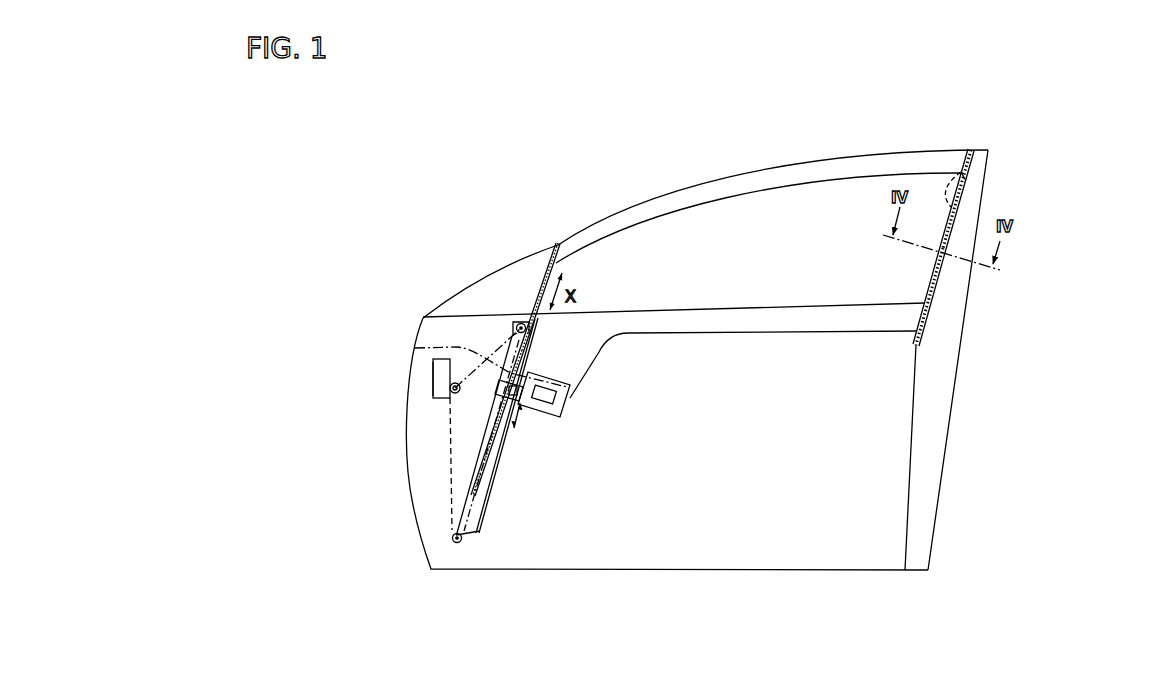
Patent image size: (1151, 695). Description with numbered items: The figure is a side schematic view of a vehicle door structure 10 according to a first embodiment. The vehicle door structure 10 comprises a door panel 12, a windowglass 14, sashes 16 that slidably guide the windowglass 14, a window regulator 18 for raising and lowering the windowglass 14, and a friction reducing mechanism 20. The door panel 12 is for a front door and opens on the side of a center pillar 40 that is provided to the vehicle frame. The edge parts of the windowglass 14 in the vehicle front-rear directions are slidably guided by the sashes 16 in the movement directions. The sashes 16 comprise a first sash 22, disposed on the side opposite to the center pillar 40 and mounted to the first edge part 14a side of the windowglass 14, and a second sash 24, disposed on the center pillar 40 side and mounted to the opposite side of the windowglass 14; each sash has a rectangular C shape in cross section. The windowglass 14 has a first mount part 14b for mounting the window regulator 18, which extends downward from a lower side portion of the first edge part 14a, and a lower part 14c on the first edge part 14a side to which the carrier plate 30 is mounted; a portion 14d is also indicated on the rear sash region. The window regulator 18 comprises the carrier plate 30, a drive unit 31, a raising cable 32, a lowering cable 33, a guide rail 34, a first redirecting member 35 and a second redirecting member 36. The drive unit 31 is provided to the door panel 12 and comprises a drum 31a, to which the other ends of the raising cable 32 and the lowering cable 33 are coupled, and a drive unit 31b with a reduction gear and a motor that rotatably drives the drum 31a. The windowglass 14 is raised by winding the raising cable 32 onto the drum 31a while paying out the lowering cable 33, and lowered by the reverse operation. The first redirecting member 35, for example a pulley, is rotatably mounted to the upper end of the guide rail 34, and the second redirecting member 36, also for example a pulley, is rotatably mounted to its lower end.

The vehicle door structure 10 is at (541, 221).
The door panel 12 is at (611, 523).
The windowglass 14 is at (661, 210).
The first edge part 14a is at (511, 364).
The first mount part 14b is at (573, 364).
The lower part 14c is at (518, 431).
The rear sash lower portion 14d is at (940, 277).
The sashes 16 is at (523, 292).
The window regulator 18 is at (515, 448).
The friction reducing mechanism 20 is at (983, 162).
The first sash 22 is at (551, 266).
The second sash 24 is at (966, 180).
The carrier plate 30 is at (541, 371).
The drive unit 31 is at (424, 379).
The drum 31a is at (433, 388).
The drive unit 31b is at (442, 372).
The raising cable 32 is at (423, 346).
The lowering cable 33 is at (448, 437).
The guide rail 34 is at (493, 495).
The first redirecting member 35 is at (518, 323).
The second redirecting member 36 is at (452, 538).
The center pillar 40 is at (947, 382).